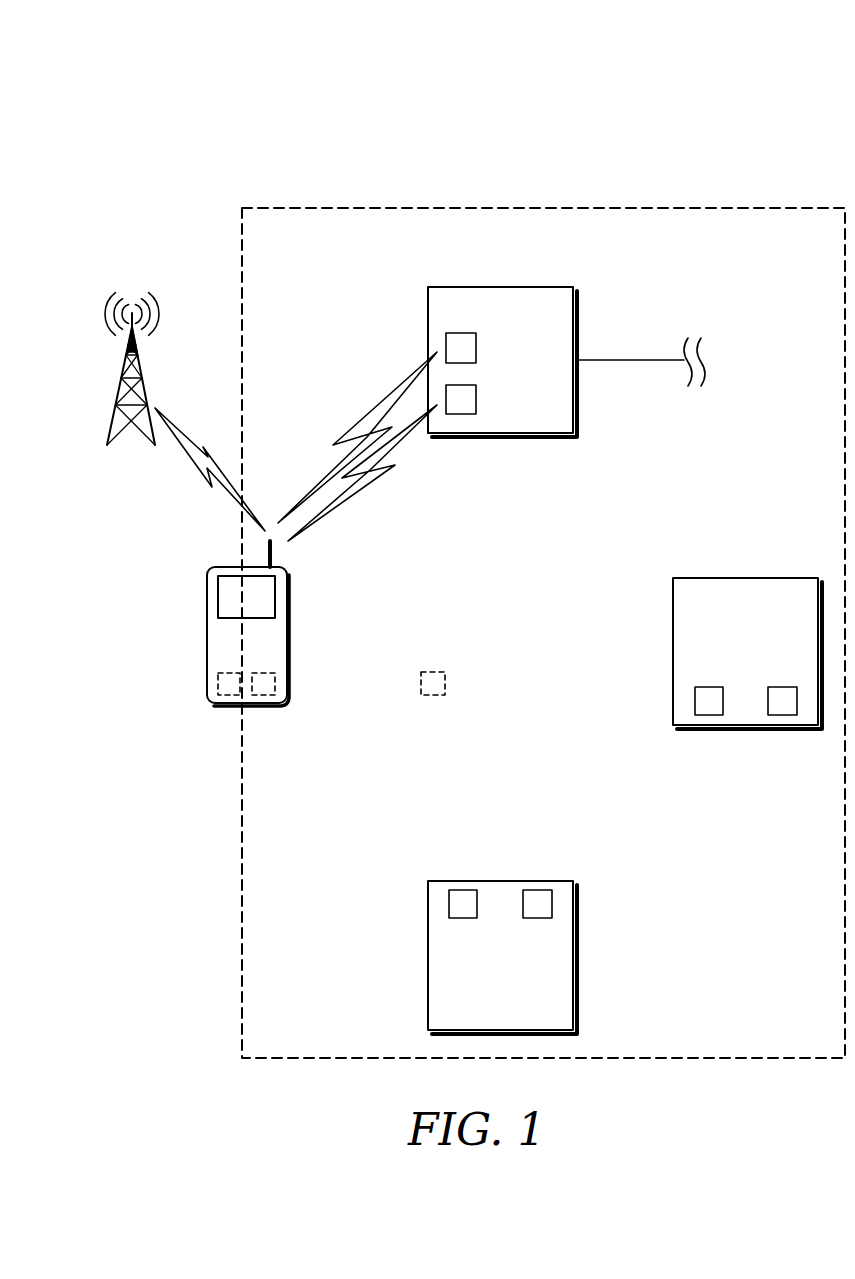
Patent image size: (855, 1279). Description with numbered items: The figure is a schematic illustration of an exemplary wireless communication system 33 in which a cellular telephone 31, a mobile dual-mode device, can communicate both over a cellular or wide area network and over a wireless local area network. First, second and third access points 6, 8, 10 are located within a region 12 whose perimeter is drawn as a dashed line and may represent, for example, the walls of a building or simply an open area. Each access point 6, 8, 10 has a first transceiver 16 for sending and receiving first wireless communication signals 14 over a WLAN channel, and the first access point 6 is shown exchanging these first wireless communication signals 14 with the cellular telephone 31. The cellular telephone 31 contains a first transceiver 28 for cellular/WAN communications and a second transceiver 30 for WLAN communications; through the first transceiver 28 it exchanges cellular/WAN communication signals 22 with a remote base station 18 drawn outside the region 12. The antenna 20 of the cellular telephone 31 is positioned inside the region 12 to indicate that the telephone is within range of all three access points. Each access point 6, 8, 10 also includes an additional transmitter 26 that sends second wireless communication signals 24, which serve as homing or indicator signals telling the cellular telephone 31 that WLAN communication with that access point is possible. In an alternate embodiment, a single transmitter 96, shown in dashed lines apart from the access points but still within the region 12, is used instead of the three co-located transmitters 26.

The wireless communication system 33 is at (748, 58).
The region 12 is at (298, 198).
The base station 18 is at (110, 376).
The cellular/WAN communication signals 22 is at (207, 450).
The first wireless communication signals 14 is at (347, 430).
The second wireless communication signals 24 is at (382, 472).
The cellular telephone 31 is at (235, 614).
The antenna 20 is at (274, 553).
The first transceiver 28 is at (230, 671).
The second transceiver 30 is at (262, 671).
The single transmitter 96 is at (433, 671).
The first access point 6 is at (458, 275).
The second access point 8 is at (706, 568).
The third access point 10 is at (459, 868).
The first transceiver 16 is at (476, 348).
The additional transmitter 26 is at (476, 400).